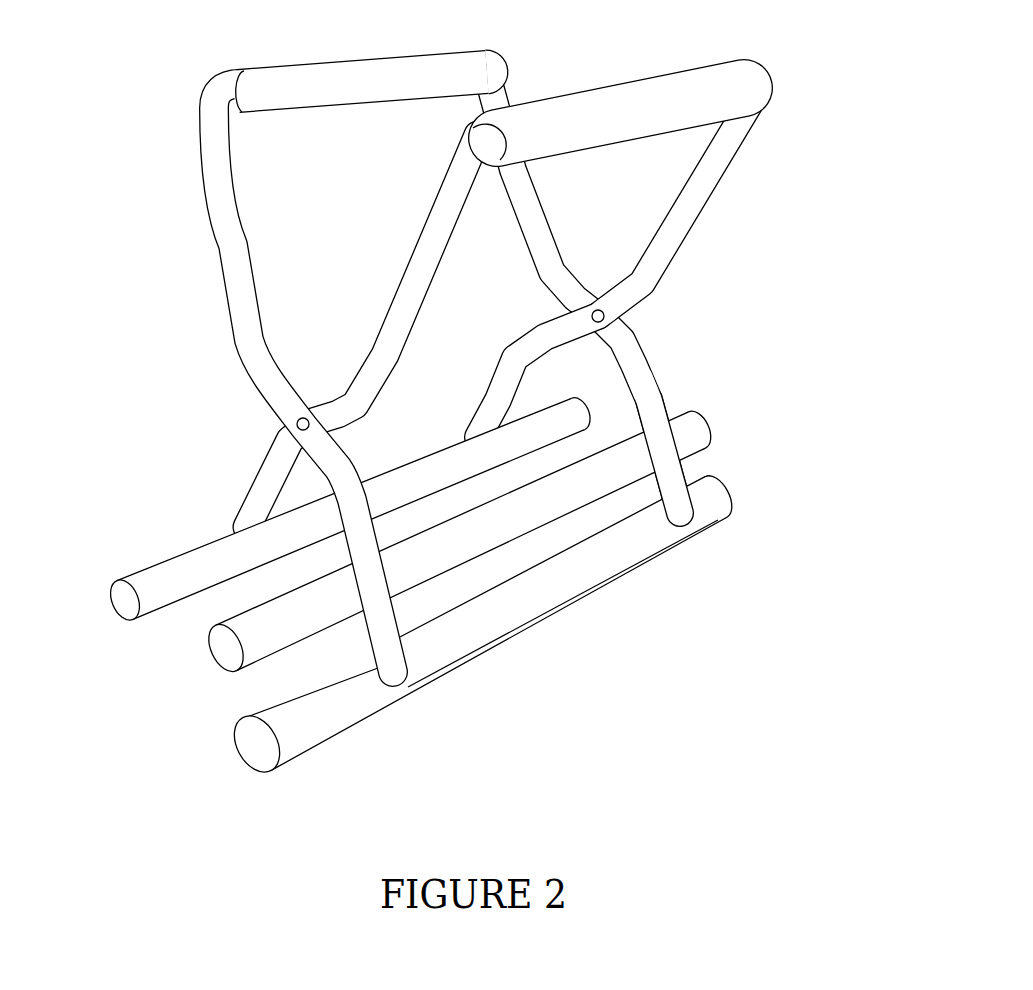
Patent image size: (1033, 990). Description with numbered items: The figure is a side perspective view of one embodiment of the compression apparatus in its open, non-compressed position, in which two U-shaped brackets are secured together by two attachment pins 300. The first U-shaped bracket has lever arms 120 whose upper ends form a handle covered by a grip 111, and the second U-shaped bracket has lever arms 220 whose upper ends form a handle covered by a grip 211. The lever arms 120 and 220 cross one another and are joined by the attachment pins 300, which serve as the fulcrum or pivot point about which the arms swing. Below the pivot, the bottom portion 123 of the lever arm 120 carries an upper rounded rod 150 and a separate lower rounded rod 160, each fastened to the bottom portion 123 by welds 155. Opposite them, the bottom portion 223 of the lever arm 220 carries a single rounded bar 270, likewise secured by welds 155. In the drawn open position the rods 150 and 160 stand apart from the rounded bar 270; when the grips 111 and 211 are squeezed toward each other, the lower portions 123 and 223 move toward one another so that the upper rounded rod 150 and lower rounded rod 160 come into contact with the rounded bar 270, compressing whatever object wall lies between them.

The grip 111 is at (284, 84).
The lever arm 120 is at (218, 247).
The bottom portion of the lever arm 123 is at (650, 394).
The upper rounded rod 150 is at (707, 425).
The welds 155 is at (353, 590).
The lower rounded rod 160 is at (726, 490).
The grip 211 is at (738, 84).
The lever arm 220 is at (678, 246).
The bottom portion of the lever arm 223 is at (253, 478).
The rounded bar 270 is at (143, 574).
The attachment pins 300 is at (297, 423).